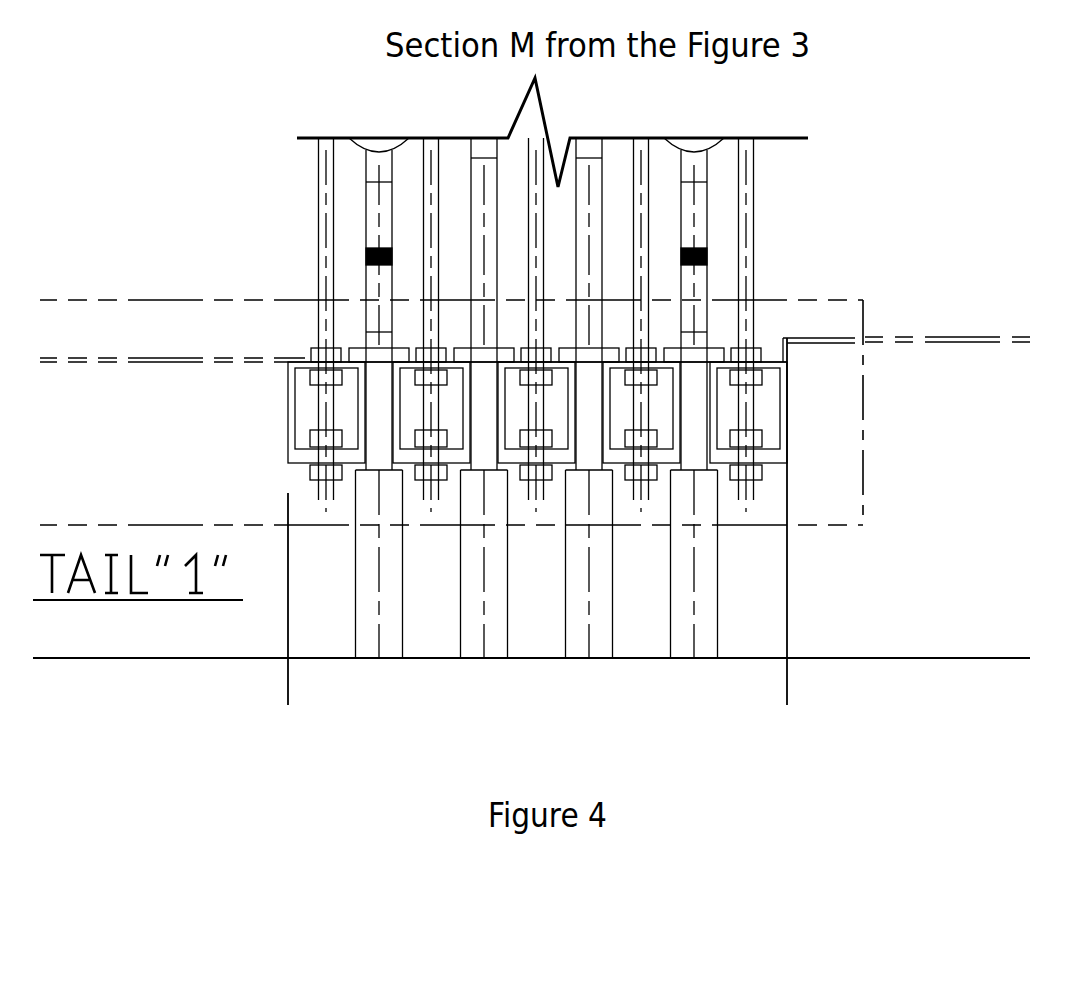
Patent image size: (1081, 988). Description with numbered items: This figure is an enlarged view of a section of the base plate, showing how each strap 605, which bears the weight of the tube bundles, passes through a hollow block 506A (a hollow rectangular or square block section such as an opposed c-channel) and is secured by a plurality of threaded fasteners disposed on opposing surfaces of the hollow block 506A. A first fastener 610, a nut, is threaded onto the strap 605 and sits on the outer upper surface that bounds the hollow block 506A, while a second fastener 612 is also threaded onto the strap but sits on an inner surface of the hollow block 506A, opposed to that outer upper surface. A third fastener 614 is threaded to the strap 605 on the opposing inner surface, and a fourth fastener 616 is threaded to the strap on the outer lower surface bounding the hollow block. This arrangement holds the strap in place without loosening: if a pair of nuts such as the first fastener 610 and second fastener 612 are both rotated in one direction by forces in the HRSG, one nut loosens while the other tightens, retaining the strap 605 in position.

The strap 605 is at (750, 180).
The first fastener 610 is at (763, 350).
The second fastener 612 is at (762, 378).
The third fastener 614 is at (762, 438).
The fourth fastener 616 is at (762, 472).
The hollow block section 506A is at (725, 460).